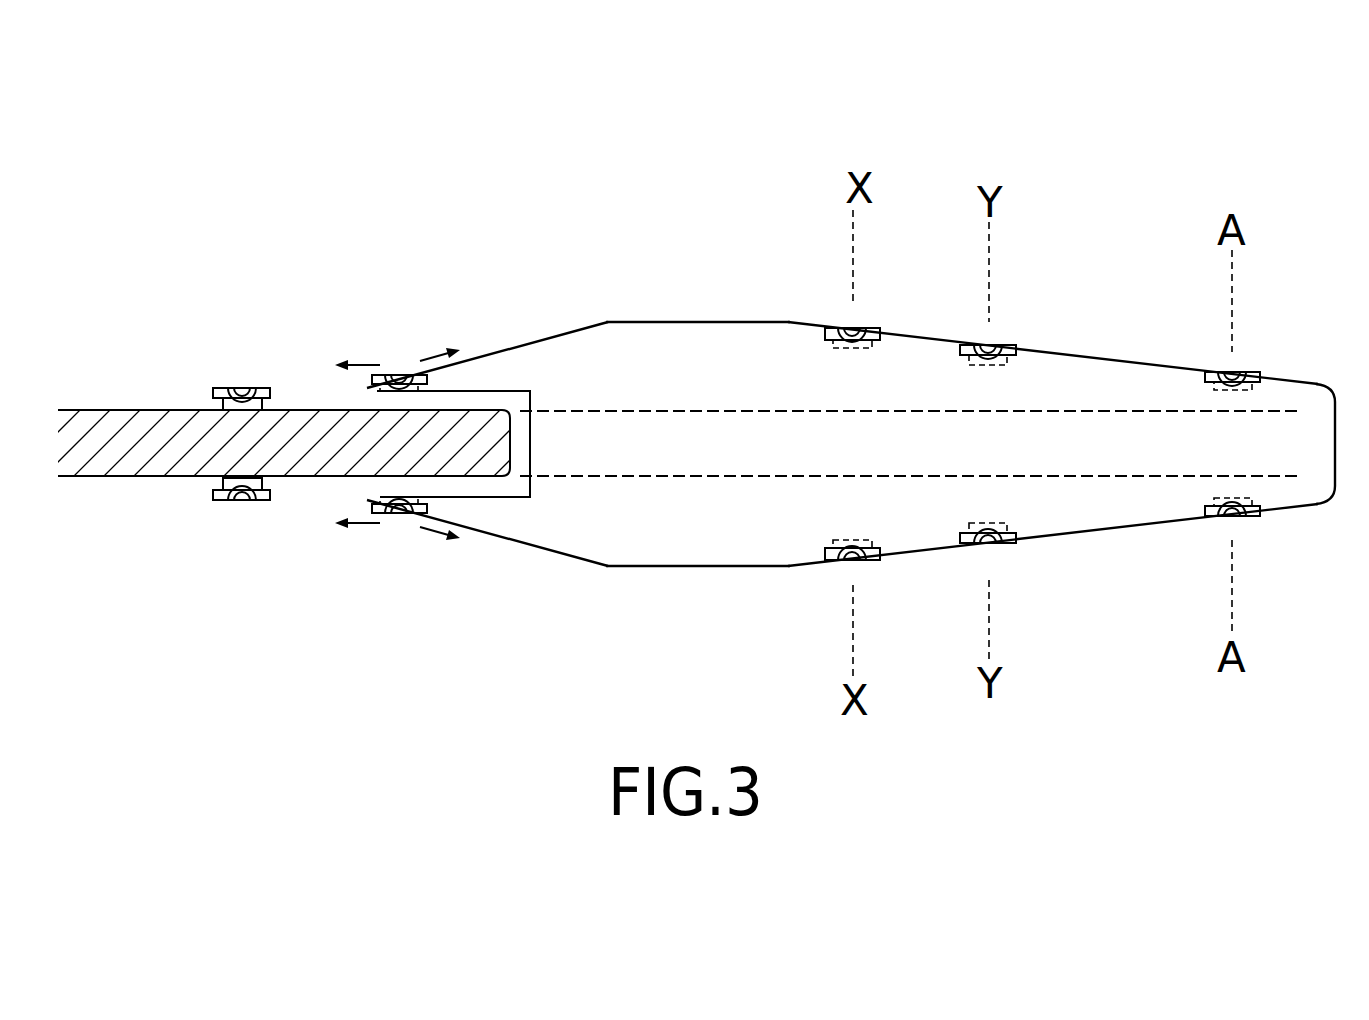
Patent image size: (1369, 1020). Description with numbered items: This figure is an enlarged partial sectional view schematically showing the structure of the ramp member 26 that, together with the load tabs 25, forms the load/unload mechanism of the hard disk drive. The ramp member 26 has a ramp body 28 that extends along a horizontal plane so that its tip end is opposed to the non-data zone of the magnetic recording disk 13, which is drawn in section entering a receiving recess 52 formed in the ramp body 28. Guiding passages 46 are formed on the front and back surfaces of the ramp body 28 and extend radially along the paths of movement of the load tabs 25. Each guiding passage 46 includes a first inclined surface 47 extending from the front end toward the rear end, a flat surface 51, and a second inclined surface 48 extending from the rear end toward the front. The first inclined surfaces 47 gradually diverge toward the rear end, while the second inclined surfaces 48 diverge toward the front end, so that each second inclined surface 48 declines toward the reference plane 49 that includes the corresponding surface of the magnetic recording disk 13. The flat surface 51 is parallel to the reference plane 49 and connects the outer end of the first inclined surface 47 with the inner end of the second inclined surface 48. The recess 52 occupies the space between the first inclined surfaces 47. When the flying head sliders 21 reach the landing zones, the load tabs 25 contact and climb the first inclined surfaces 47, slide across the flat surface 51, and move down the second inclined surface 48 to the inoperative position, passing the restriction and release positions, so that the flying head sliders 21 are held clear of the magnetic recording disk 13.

The magnetic recording disk 13 is at (115, 409).
The flying head slider 21 is at (268, 400).
The load tab 25 is at (232, 378).
The ramp member 26 is at (457, 195).
The ramp body 28 is at (1305, 378).
The guiding passage 46 is at (693, 309).
The first inclined surface 47 is at (523, 347).
The second inclined surface 48 is at (1082, 352).
The reference plane 49 is at (653, 411).
The flat surface 51 is at (753, 321).
The recess 52 is at (533, 412).